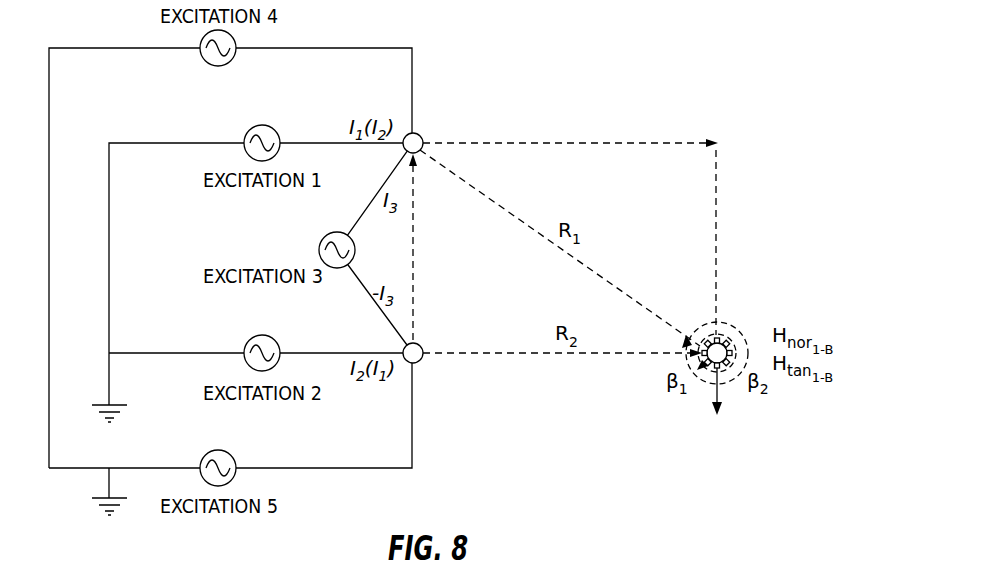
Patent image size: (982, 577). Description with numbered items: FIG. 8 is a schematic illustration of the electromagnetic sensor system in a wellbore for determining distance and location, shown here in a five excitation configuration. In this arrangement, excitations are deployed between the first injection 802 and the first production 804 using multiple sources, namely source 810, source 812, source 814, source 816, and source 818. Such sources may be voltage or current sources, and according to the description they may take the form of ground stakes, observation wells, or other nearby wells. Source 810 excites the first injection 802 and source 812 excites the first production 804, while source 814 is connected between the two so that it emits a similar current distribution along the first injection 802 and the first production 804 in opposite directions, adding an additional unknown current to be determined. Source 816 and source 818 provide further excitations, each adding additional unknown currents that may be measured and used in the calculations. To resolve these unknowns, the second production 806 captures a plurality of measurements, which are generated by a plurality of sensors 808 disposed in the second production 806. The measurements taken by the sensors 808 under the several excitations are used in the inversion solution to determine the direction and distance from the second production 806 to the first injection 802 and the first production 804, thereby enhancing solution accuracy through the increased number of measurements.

The first injection 802 is at (417, 133).
The first production 804 is at (421, 344).
The second production 806 is at (720, 368).
The sensors 808 is at (727, 340).
The source 810 is at (264, 126).
The source 812 is at (266, 336).
The source 814 is at (336, 232).
The source 816 is at (218, 66).
The source 818 is at (221, 450).